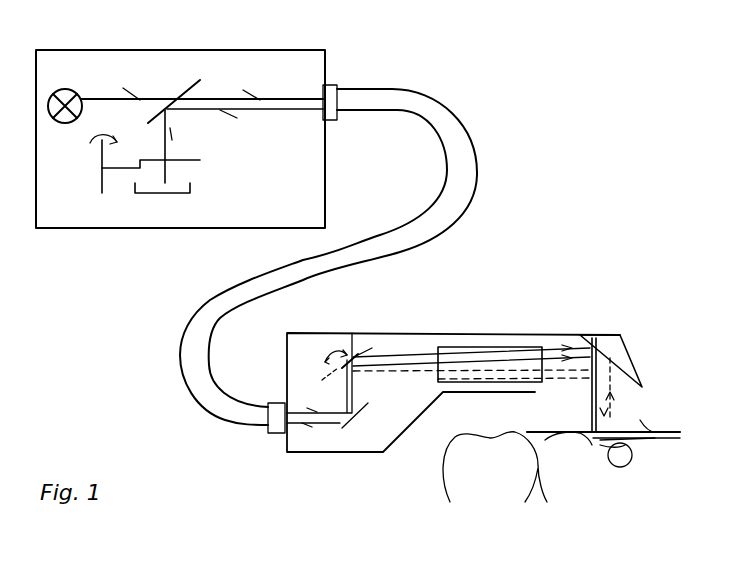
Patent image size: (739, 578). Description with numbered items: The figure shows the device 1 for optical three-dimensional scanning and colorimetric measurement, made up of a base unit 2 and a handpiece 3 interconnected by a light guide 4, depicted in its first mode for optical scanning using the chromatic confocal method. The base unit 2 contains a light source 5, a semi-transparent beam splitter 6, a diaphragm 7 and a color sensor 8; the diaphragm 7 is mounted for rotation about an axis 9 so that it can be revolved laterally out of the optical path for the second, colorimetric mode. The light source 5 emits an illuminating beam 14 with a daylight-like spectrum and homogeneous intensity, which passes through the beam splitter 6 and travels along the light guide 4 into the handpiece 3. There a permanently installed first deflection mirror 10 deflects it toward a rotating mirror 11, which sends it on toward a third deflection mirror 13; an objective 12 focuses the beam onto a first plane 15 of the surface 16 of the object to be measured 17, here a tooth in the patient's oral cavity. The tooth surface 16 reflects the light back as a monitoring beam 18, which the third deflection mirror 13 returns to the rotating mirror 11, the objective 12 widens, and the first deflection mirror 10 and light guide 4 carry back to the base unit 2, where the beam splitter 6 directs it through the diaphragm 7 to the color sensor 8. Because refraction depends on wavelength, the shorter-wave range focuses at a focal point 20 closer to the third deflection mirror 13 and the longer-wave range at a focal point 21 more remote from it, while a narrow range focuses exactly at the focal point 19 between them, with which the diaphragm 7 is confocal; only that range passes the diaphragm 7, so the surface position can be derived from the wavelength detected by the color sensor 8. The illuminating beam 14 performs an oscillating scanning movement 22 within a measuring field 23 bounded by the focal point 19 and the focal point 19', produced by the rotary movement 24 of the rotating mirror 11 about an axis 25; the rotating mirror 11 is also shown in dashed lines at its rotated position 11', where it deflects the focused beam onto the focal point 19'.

The device 1 is at (512, 160).
The base unit 2 is at (313, 49).
The handpiece 3 is at (607, 333).
The light guide 4 is at (383, 255).
The light source 5 is at (65, 90).
The beam splitter 6 is at (185, 80).
The diaphragm 7 is at (192, 158).
The color sensor 8 is at (190, 195).
The axis 9 is at (100, 190).
The first deflection mirror 10 is at (330, 434).
The rotating mirror 11 is at (363, 330).
The position of the rotating mirror 11' is at (391, 323).
The objective 12 is at (463, 347).
The third deflection mirror 13 is at (643, 370).
The illuminating beam 14 is at (108, 98).
The first plane 15 is at (643, 423).
The surface 16 is at (653, 438).
The object to be measured 17 is at (625, 490).
The monitoring beam 18 is at (270, 110).
The focal point 19 is at (603, 417).
The focal point 19' is at (657, 425).
The focal point 20 is at (580, 381).
The focal point 21 is at (593, 455).
The scanning movement 22 is at (630, 462).
The measuring field 23 is at (613, 423).
The rotary movement 24 is at (330, 352).
The axis 25 is at (340, 390).